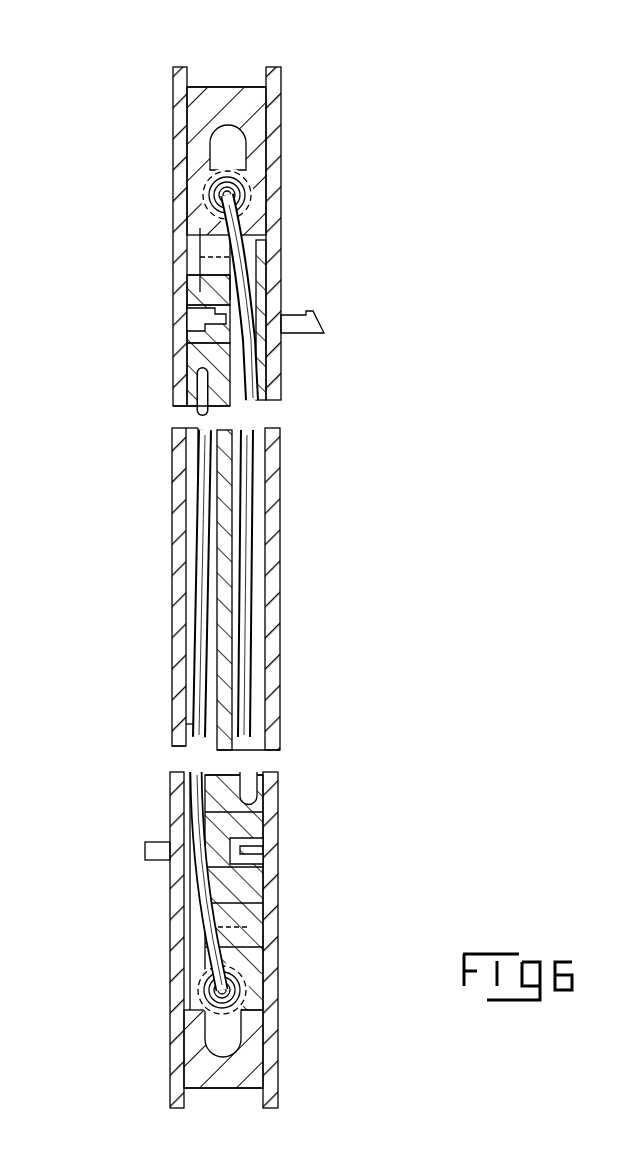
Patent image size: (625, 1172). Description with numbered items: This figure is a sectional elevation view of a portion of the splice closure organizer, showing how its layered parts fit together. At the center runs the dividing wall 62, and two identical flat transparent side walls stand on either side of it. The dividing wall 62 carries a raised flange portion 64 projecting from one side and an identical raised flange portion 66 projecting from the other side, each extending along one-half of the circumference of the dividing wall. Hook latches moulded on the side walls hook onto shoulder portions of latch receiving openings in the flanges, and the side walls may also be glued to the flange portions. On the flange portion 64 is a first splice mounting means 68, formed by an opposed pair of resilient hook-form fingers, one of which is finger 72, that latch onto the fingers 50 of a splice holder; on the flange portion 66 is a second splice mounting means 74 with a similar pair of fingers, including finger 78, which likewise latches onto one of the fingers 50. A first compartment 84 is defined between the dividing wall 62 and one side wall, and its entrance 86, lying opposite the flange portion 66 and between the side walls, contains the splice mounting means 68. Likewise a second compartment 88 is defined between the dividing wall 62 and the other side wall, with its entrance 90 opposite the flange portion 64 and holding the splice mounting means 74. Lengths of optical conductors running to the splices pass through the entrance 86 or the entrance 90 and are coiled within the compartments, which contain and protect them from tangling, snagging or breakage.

The fingers 50 is at (198, 293).
The dividing wall 62 is at (222, 612).
The raised flange portion 64 is at (197, 318).
The raised flange portion 66 is at (242, 884).
The first splice mounting means 68 is at (213, 236).
The resilient finger 72 is at (212, 186).
The second splice mounting means 74 is at (250, 952).
The resilient finger 78 is at (250, 975).
The first compartment 84 is at (262, 628).
The entrance 86 is at (305, 322).
The second compartment 88 is at (200, 408).
The entrance 90 is at (194, 905).